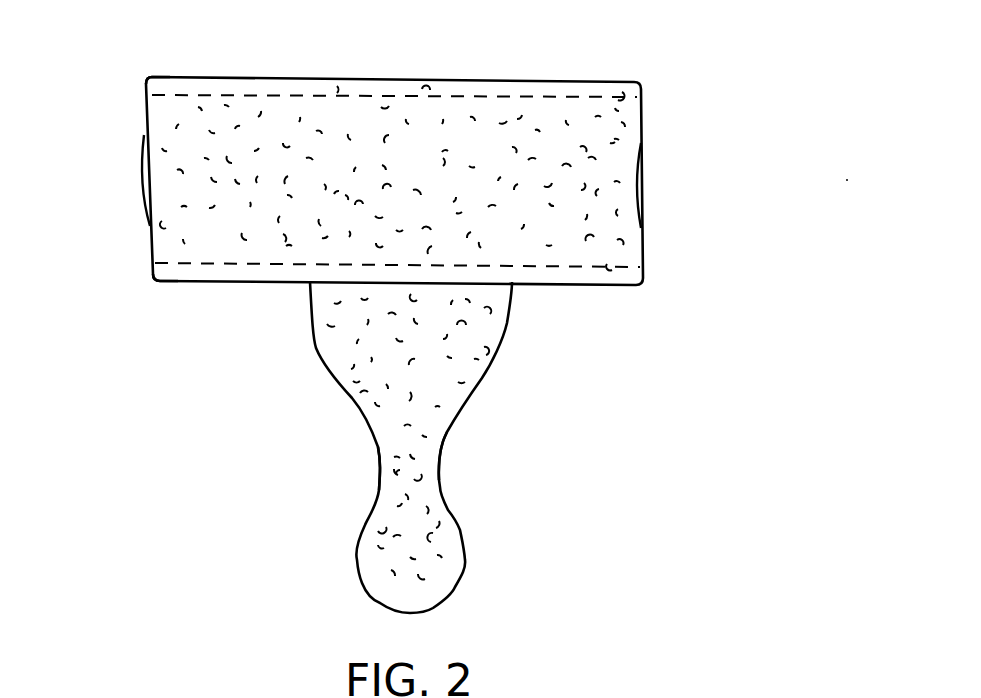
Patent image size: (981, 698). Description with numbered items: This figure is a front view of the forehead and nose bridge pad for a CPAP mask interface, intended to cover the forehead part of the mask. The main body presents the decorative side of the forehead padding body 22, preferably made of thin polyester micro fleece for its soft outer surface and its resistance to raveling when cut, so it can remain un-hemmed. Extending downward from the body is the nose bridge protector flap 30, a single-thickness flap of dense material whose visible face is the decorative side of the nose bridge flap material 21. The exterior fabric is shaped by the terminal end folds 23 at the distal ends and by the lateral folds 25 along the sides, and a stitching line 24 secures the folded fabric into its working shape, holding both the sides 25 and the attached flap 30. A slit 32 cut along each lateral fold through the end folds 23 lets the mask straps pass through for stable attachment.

The decorative side of the nose bridge flap material 21 is at (405, 357).
The decorative side of the forehead padding body material 22 is at (408, 145).
The terminal end folds in exterior decorative fabric 23 is at (137, 235).
The stitching line 24 is at (557, 98).
The lateral fold in exterior decorative fabric 25 is at (160, 64).
The nose bridge protector flap 30 is at (464, 444).
The slit 32 is at (145, 185).